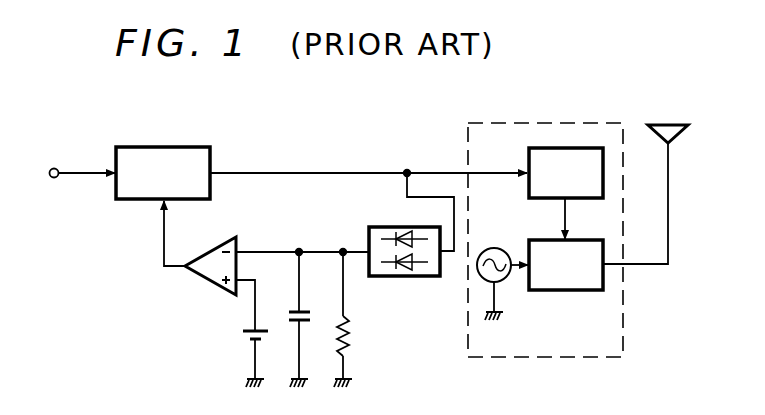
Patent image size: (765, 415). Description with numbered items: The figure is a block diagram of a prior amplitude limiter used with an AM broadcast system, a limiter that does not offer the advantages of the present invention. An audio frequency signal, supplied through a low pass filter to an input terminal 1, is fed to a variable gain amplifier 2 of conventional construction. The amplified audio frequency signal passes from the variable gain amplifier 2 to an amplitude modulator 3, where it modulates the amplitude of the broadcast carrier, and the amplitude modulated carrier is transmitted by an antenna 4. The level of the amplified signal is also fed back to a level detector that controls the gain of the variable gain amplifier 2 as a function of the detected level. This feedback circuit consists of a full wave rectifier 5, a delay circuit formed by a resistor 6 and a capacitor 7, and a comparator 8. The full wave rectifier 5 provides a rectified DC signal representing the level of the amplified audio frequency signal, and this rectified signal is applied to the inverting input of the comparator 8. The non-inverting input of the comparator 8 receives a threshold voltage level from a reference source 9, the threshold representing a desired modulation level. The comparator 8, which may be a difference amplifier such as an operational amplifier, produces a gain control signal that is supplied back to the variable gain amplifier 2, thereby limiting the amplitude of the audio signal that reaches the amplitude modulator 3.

The input terminal 1 is at (57, 168).
The variable gain amplifier 2 is at (206, 146).
The amplitude modulator 3 is at (577, 122).
The antenna 4 is at (662, 148).
The full wave rectifier 5 is at (413, 278).
The resistor 6 is at (350, 339).
The capacitor 7 is at (306, 311).
The comparator 8 is at (235, 236).
The reference source 9 is at (249, 339).